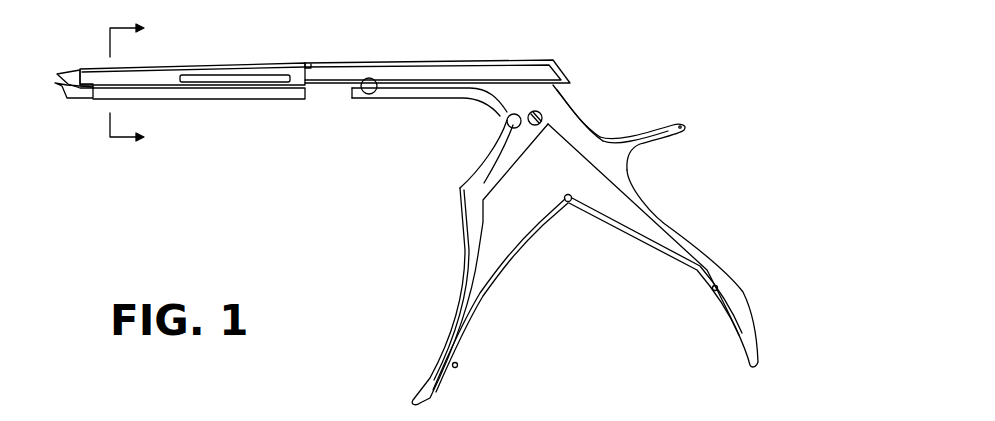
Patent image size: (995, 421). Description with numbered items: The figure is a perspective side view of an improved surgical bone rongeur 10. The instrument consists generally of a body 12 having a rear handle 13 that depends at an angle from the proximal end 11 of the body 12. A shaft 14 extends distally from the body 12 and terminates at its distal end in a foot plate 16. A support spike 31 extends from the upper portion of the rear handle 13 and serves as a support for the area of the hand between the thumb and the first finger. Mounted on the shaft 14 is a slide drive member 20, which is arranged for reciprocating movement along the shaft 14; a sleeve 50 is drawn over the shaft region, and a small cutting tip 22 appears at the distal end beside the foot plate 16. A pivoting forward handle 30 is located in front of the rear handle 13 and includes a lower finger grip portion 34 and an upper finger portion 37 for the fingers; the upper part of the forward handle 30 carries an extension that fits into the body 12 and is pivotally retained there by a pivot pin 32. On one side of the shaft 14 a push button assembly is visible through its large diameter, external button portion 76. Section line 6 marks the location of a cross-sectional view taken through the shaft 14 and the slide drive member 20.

The surgical bone rongeur 10 is at (652, 53).
The proximal end 11 is at (576, 100).
The body 12 is at (530, 98).
The rear handle 13 is at (687, 230).
The shaft 14 is at (410, 90).
The foot plate 16 is at (55, 84).
The slide drive member 20 is at (462, 75).
The cutting tip 22 is at (78, 70).
The forward handle 30 is at (459, 188).
The support spike 31 is at (680, 122).
The pivot pin 32 is at (507, 119).
The lower finger grip portion 34 is at (468, 255).
The upper finger portion 37 is at (489, 159).
The slider sleeve 50 is at (168, 67).
The external button portion 76 is at (368, 77).
The section line 6- 6 is at (127, 84).